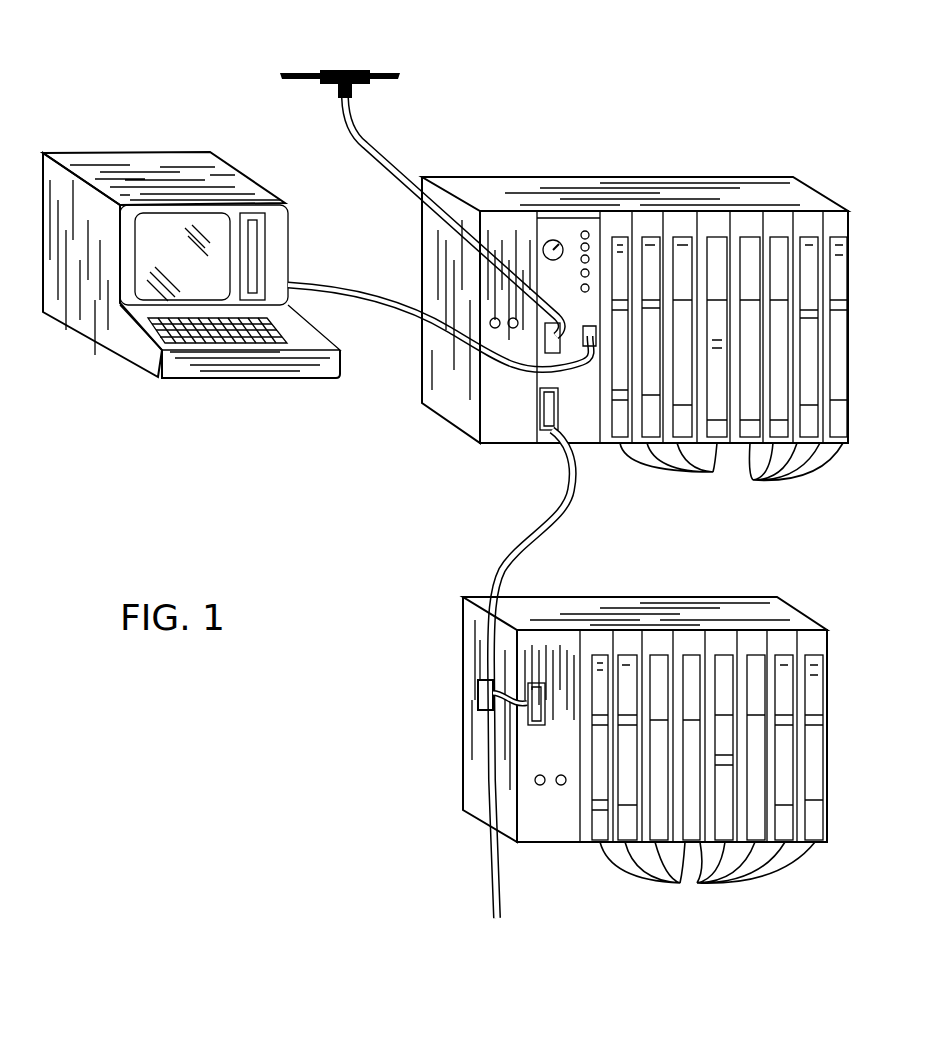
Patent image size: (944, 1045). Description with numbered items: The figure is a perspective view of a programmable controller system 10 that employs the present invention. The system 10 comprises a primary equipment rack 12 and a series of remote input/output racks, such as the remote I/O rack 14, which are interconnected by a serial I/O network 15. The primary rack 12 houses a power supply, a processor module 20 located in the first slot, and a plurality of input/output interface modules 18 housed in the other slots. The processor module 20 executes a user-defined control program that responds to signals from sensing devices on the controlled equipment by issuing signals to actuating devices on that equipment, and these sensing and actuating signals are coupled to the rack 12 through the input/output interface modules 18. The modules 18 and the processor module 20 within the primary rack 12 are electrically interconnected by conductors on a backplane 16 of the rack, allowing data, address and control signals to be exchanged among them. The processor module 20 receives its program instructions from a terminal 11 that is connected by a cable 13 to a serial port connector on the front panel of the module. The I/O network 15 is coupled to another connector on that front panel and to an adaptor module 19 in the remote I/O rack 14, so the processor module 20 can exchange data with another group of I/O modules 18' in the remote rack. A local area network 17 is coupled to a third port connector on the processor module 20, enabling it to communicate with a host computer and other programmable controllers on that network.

The programmable controller system 10 is at (387, 452).
The terminal 11 is at (290, 264).
The primary equipment rack 12 is at (622, 178).
The cable 13 is at (400, 312).
The remote input/output rack 14 is at (663, 597).
The serial I/O network 15 is at (538, 528).
The backplane 16 is at (510, 176).
The local area network 17 is at (367, 152).
The input/output interface modules 18 is at (731, 469).
The I/O modules 18' is at (707, 881).
The adaptor module 19 is at (545, 843).
The processor module 20 is at (590, 443).